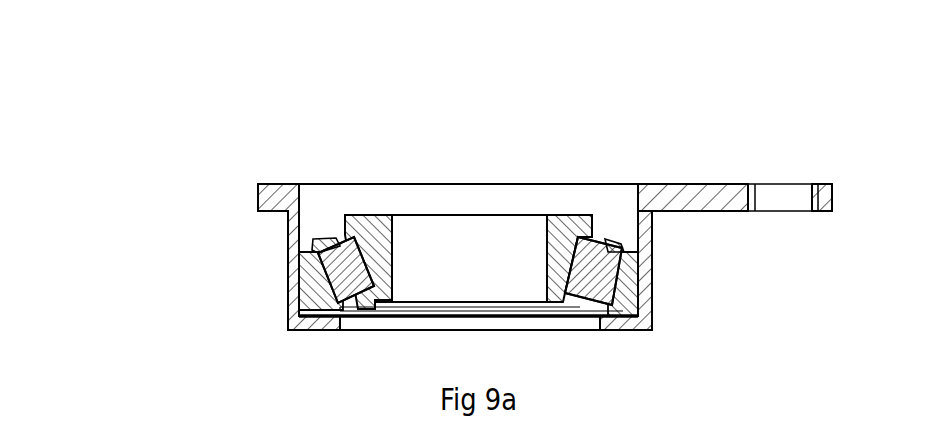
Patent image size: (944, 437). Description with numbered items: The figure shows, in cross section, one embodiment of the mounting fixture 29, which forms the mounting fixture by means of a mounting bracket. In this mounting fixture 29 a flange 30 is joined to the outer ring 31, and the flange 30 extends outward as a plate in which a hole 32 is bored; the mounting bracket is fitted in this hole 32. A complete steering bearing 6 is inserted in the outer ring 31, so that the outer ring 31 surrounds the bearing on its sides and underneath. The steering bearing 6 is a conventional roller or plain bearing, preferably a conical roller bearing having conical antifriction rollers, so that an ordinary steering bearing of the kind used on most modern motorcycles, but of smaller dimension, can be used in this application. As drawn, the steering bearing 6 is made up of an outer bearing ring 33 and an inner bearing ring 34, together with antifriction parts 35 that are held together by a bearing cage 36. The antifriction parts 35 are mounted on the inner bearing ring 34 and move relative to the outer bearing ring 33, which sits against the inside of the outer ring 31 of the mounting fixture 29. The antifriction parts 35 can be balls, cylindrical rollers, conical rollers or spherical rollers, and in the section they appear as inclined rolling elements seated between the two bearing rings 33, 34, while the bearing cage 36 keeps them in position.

The mounting fixture 29 is at (292, 140).
The flange 30 is at (676, 191).
The outer ring 31 is at (655, 277).
The hole 32 is at (782, 198).
The outer bearing ring 33 is at (302, 301).
The inner bearing ring 34 is at (360, 218).
The antifriction parts 35 is at (345, 270).
The bearing cage 36 is at (317, 248).
The steering bearing 6 is at (432, 213).